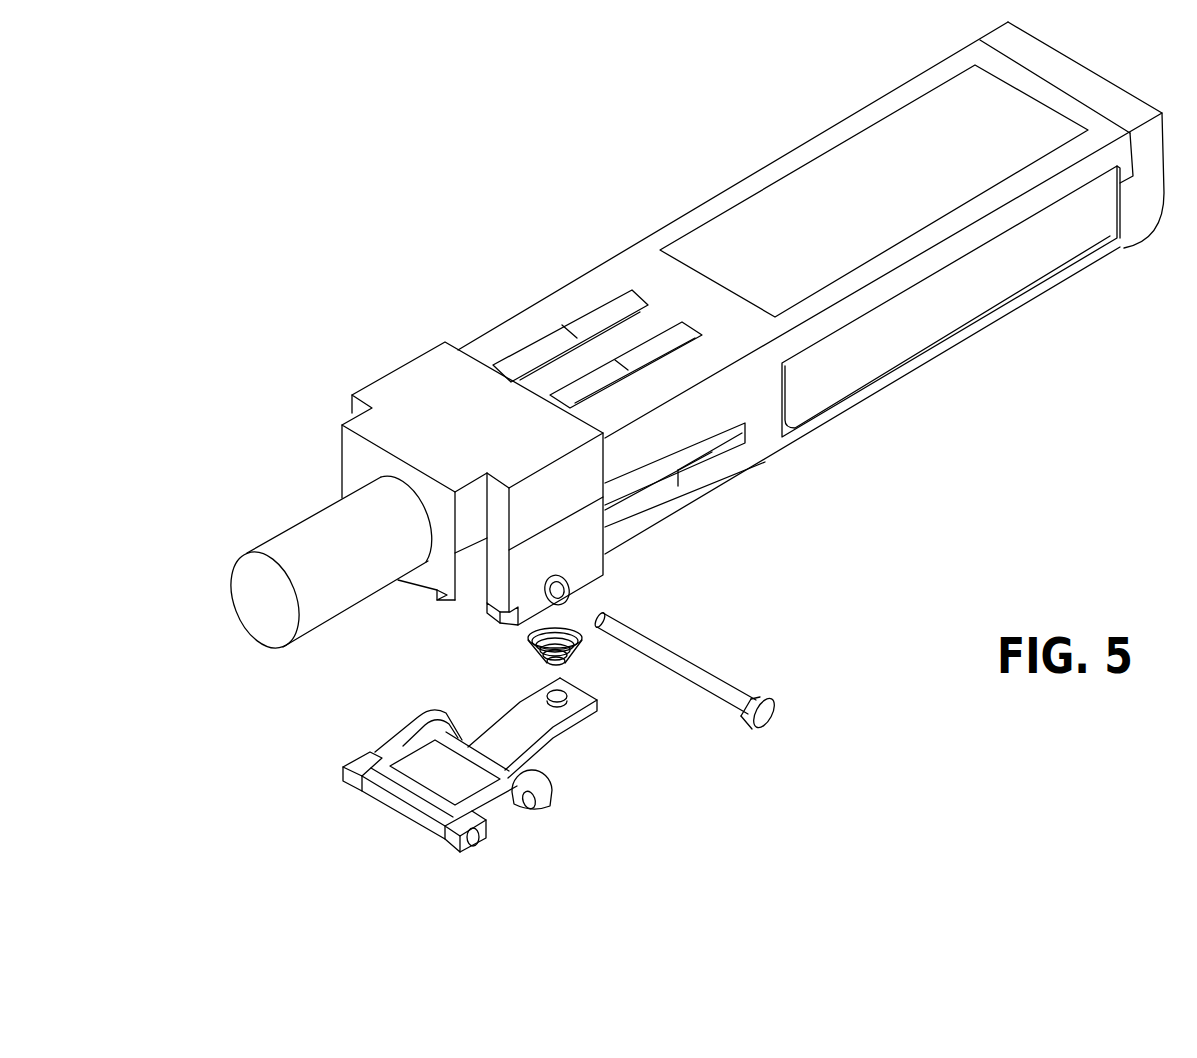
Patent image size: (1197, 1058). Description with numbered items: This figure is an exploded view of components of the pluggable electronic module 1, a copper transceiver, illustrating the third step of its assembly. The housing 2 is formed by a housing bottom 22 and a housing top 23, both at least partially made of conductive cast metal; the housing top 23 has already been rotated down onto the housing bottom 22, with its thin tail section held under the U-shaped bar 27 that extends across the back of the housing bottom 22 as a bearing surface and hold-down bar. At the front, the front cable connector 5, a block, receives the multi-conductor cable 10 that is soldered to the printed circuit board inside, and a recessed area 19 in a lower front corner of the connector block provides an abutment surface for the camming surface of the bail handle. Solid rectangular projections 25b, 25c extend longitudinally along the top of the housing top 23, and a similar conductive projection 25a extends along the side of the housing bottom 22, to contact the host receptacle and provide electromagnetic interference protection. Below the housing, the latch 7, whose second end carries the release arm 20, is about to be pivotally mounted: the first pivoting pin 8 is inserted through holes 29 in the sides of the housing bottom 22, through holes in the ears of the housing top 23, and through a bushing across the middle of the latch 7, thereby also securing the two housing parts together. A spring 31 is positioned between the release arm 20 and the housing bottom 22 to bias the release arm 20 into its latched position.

The pluggable electronic module 1 is at (480, 115).
The housing 2 is at (692, 207).
The front cable connector 5 is at (398, 363).
The latch 7 is at (395, 745).
The first pivoting pin 8 is at (775, 715).
The multi-conductor cable 10 is at (300, 520).
The recessed area 19 is at (498, 617).
The release arm 20 is at (567, 733).
The housing bottom 22 is at (1027, 275).
The housing top 23 is at (810, 200).
The conductive projection 25a is at (698, 467).
The projection 25b is at (677, 338).
The projection 25c is at (530, 357).
The U-shaped bar 27 is at (1065, 72).
The holes 29 is at (578, 592).
The spring 31 is at (585, 646).